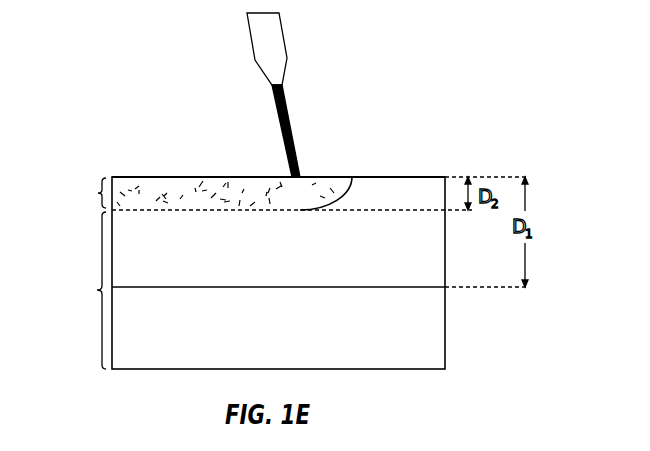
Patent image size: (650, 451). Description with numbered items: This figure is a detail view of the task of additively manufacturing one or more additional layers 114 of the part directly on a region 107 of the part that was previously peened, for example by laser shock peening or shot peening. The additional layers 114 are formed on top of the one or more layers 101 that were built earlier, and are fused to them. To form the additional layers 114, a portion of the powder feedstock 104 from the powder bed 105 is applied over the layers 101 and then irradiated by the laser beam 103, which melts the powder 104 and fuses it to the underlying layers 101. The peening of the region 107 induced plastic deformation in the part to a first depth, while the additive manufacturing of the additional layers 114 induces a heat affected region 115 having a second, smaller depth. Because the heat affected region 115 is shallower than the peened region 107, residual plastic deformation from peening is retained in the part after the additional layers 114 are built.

The layer 101 is at (251, 273).
The laser beam 103 is at (272, 43).
The powder feedstock 104 is at (382, 168).
The powder bed 105 is at (333, 138).
The peened region 107 is at (296, 261).
The additional layer 114 is at (264, 193).
The heat affected region 115 is at (203, 195).